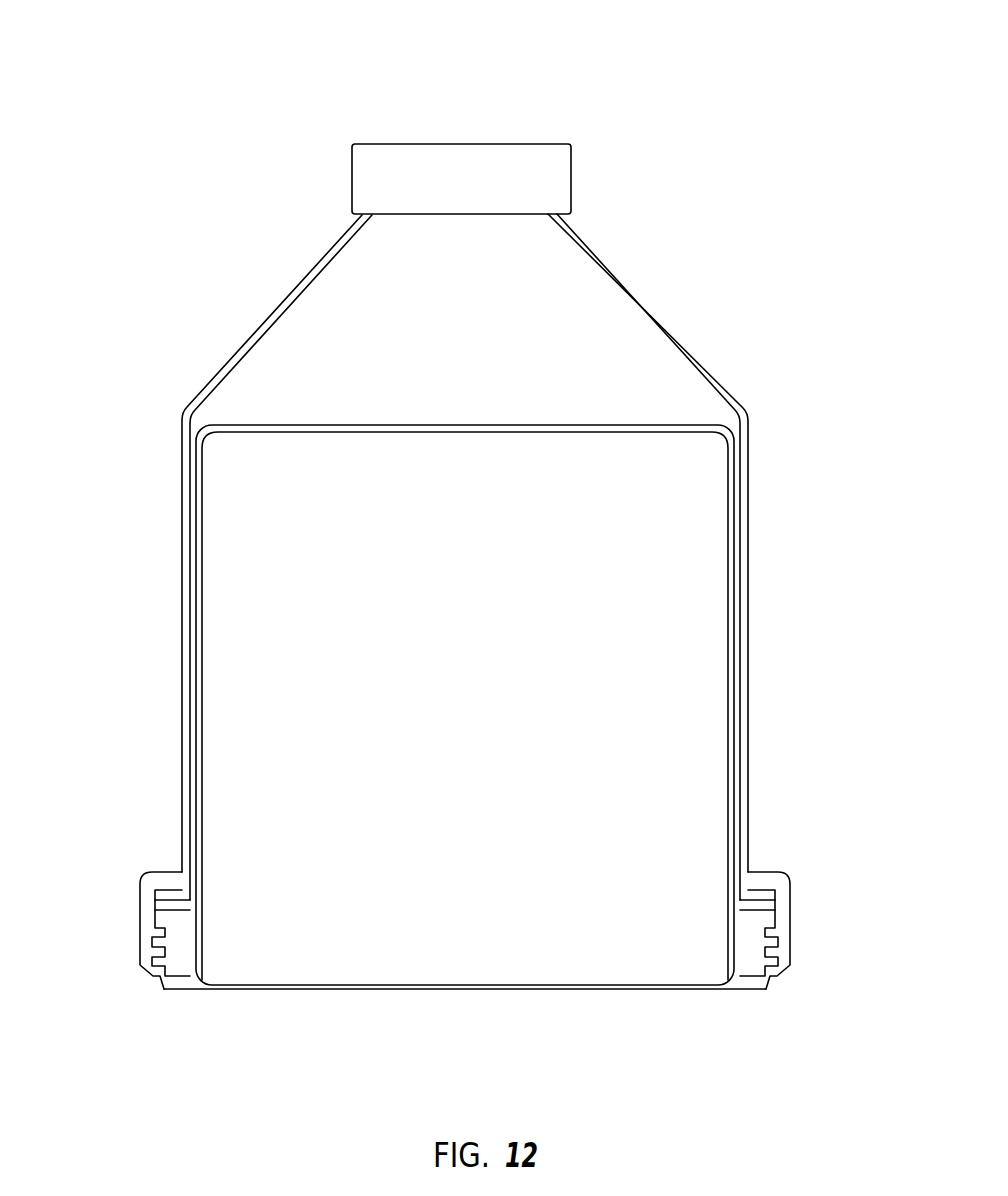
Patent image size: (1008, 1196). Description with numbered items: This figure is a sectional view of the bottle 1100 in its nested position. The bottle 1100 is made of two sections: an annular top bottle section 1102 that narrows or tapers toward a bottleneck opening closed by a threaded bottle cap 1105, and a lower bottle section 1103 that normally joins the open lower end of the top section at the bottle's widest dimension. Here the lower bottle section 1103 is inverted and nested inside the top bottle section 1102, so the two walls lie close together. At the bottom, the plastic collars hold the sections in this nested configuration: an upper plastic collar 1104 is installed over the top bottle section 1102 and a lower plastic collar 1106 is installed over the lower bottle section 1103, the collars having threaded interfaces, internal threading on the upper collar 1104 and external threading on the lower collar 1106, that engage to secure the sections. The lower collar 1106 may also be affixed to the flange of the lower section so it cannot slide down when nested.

The bottle 1100 is at (468, 78).
The top bottle section 1102 is at (182, 622).
The lower bottle section 1103 is at (200, 768).
The upper plastic collar 1104 is at (792, 892).
The bottle cap 1105 is at (565, 188).
The lower plastic collar 1106 is at (182, 955).